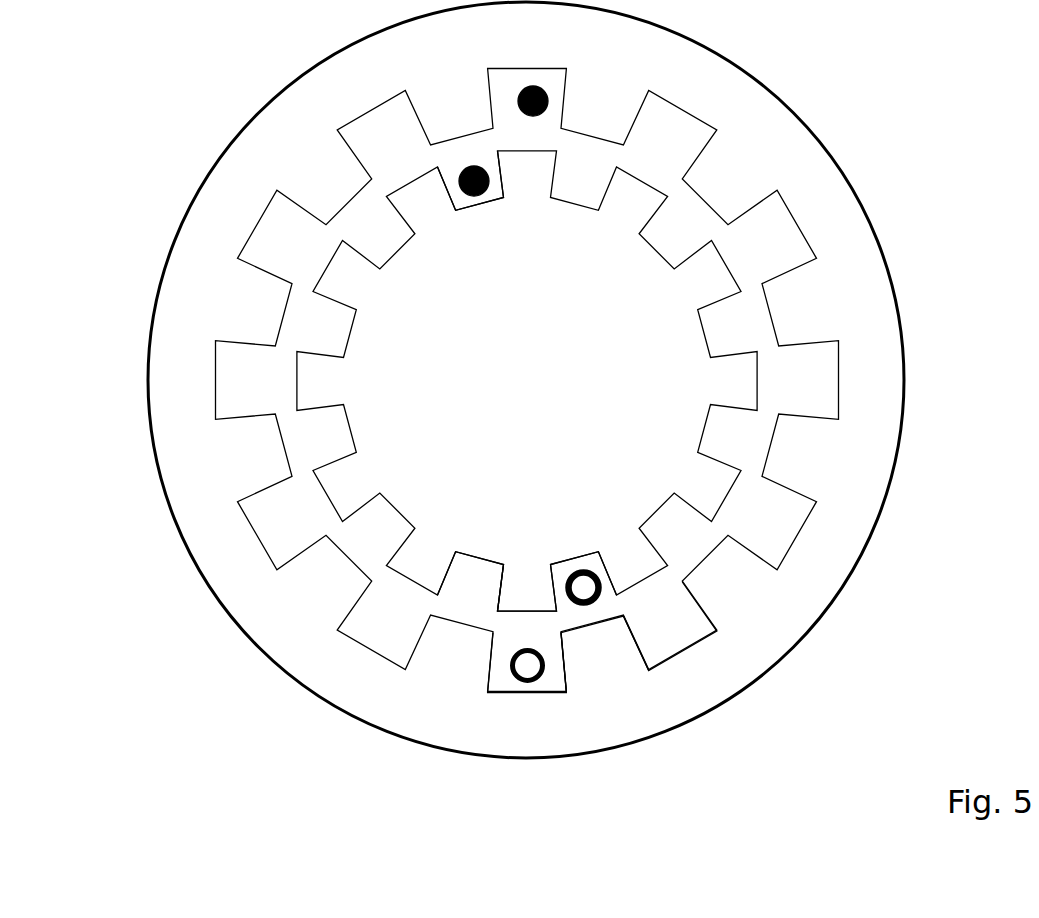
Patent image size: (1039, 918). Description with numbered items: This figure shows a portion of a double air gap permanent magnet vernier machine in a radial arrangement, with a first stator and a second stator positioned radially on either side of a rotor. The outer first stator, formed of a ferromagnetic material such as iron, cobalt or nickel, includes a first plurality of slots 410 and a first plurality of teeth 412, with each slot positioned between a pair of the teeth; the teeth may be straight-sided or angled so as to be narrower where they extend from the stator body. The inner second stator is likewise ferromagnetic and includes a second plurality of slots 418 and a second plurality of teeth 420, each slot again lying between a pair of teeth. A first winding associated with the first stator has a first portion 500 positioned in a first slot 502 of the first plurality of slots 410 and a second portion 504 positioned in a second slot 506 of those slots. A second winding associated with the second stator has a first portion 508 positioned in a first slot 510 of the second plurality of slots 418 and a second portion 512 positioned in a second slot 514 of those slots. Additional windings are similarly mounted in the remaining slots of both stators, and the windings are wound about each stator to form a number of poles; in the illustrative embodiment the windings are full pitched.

The second slot 506 is at (510, 65).
The second portion 504 is at (548, 98).
The second portion 512 is at (482, 194).
The second slot 514 is at (469, 203).
The first slot 510 is at (595, 554).
The first portion 508 is at (573, 573).
The first portion 500 is at (516, 676).
The first slot 502 is at (533, 697).
The first plurality of slots 410 is at (689, 643).
The first plurality of teeth 412 is at (619, 673).
The second plurality of slots 418 is at (489, 600).
The second plurality of teeth 420 is at (546, 613).